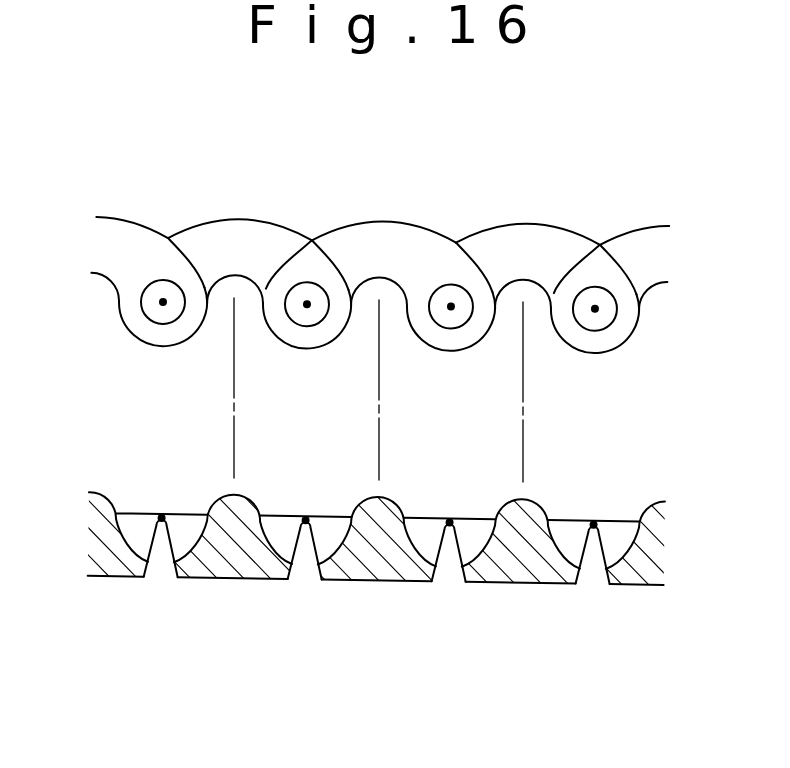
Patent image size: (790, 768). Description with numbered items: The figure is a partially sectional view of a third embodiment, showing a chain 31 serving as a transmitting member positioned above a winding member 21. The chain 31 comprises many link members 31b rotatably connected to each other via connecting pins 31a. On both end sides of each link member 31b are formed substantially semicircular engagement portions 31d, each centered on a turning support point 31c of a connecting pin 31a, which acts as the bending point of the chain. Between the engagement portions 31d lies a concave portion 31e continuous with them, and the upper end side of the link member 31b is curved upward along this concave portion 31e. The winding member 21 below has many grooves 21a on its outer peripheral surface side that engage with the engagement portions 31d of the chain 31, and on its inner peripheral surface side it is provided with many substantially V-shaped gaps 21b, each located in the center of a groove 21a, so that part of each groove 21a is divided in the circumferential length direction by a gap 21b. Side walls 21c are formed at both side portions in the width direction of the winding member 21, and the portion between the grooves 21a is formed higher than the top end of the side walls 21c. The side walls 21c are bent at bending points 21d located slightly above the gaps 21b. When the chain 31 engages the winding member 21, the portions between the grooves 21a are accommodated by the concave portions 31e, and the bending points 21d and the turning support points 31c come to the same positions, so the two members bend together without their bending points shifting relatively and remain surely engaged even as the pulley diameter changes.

The chain 31 is at (379, 234).
The connecting pin 31a is at (292, 288).
The link member 31b is at (386, 218).
The turning support point 31c is at (312, 301).
The engagement portion 31d is at (288, 345).
The concave portion 31e is at (372, 322).
The winding member 21 is at (367, 524).
The groove 21a is at (188, 548).
The gap 21b is at (165, 564).
The side wall 21c is at (140, 526).
The bending point 21d is at (164, 516).